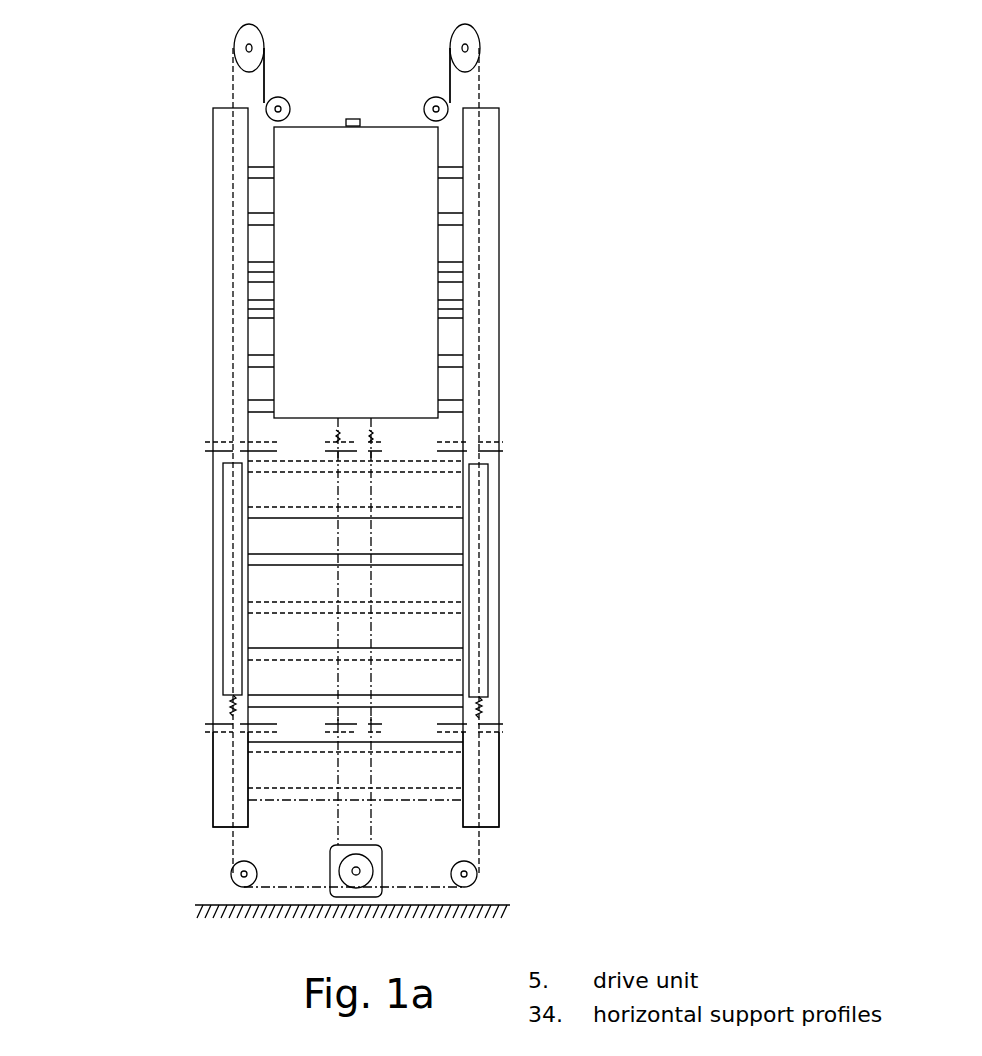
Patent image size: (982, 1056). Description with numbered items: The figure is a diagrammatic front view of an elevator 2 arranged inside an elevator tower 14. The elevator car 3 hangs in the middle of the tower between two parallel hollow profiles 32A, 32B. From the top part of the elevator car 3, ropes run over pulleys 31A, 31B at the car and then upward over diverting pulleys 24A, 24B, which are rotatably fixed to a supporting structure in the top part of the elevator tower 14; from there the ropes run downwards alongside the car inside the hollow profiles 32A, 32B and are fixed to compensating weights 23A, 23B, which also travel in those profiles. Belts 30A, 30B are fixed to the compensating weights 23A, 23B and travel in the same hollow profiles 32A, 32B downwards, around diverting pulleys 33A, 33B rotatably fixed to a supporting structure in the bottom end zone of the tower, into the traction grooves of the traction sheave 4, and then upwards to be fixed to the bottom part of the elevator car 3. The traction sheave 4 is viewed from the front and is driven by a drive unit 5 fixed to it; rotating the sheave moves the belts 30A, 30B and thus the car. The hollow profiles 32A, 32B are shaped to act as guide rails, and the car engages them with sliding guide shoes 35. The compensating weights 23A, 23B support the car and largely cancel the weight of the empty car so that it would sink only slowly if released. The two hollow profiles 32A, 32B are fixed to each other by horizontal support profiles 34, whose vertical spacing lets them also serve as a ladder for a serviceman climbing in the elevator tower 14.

The lifting device frame 2 is at (480, 207).
The elevator car 3 is at (369, 289).
The traction sheave 4 is at (342, 871).
The drive unit 5 is at (382, 857).
The elevator tower 14 is at (366, 88).
The compensating weight 23A is at (223, 562).
The compensating weight 23B is at (485, 568).
The diverting pulley 24A is at (233, 40).
The diverting pulley 24B is at (473, 42).
The belt 30A is at (232, 798).
The belt 30B is at (480, 837).
The left carrier pulley 31A is at (267, 106).
The right carrier pulley 31B is at (448, 115).
The hollow profile 32A is at (213, 297).
The hollow profile 32B is at (500, 303).
The diverting pulley 33A is at (233, 872).
The diverting pulley 33B is at (477, 875).
The horizontal support profiles 34 is at (415, 554).
The guide shoes 35 is at (261, 283).